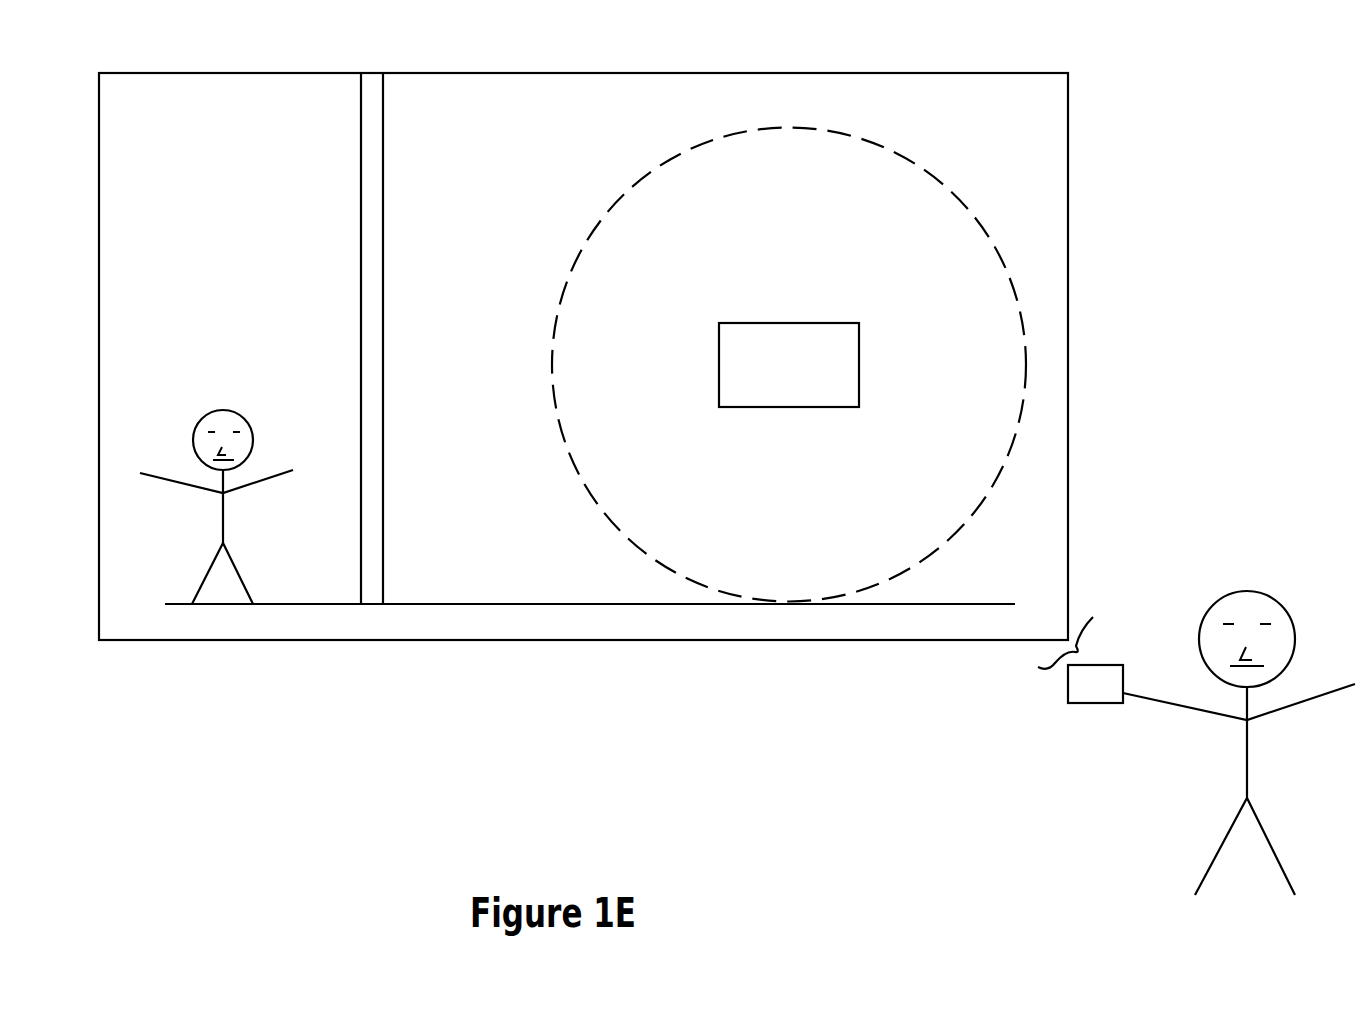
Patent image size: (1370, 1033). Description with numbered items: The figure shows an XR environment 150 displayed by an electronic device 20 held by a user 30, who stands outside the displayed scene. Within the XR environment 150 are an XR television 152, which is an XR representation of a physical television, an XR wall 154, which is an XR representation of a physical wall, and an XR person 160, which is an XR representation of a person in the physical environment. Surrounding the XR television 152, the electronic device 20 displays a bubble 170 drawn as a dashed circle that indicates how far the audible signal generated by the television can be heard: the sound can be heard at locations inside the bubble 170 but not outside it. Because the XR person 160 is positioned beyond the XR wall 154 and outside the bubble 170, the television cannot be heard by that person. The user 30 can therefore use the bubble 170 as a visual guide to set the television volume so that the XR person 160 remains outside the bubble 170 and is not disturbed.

The XR environment 150 is at (99, 74).
The XR wall 154 is at (361, 221).
The bubble 170 is at (647, 176).
The XR television 152 is at (803, 322).
The XR person 160 is at (198, 592).
The electronic device 20 is at (1080, 660).
The user 30 is at (1207, 872).